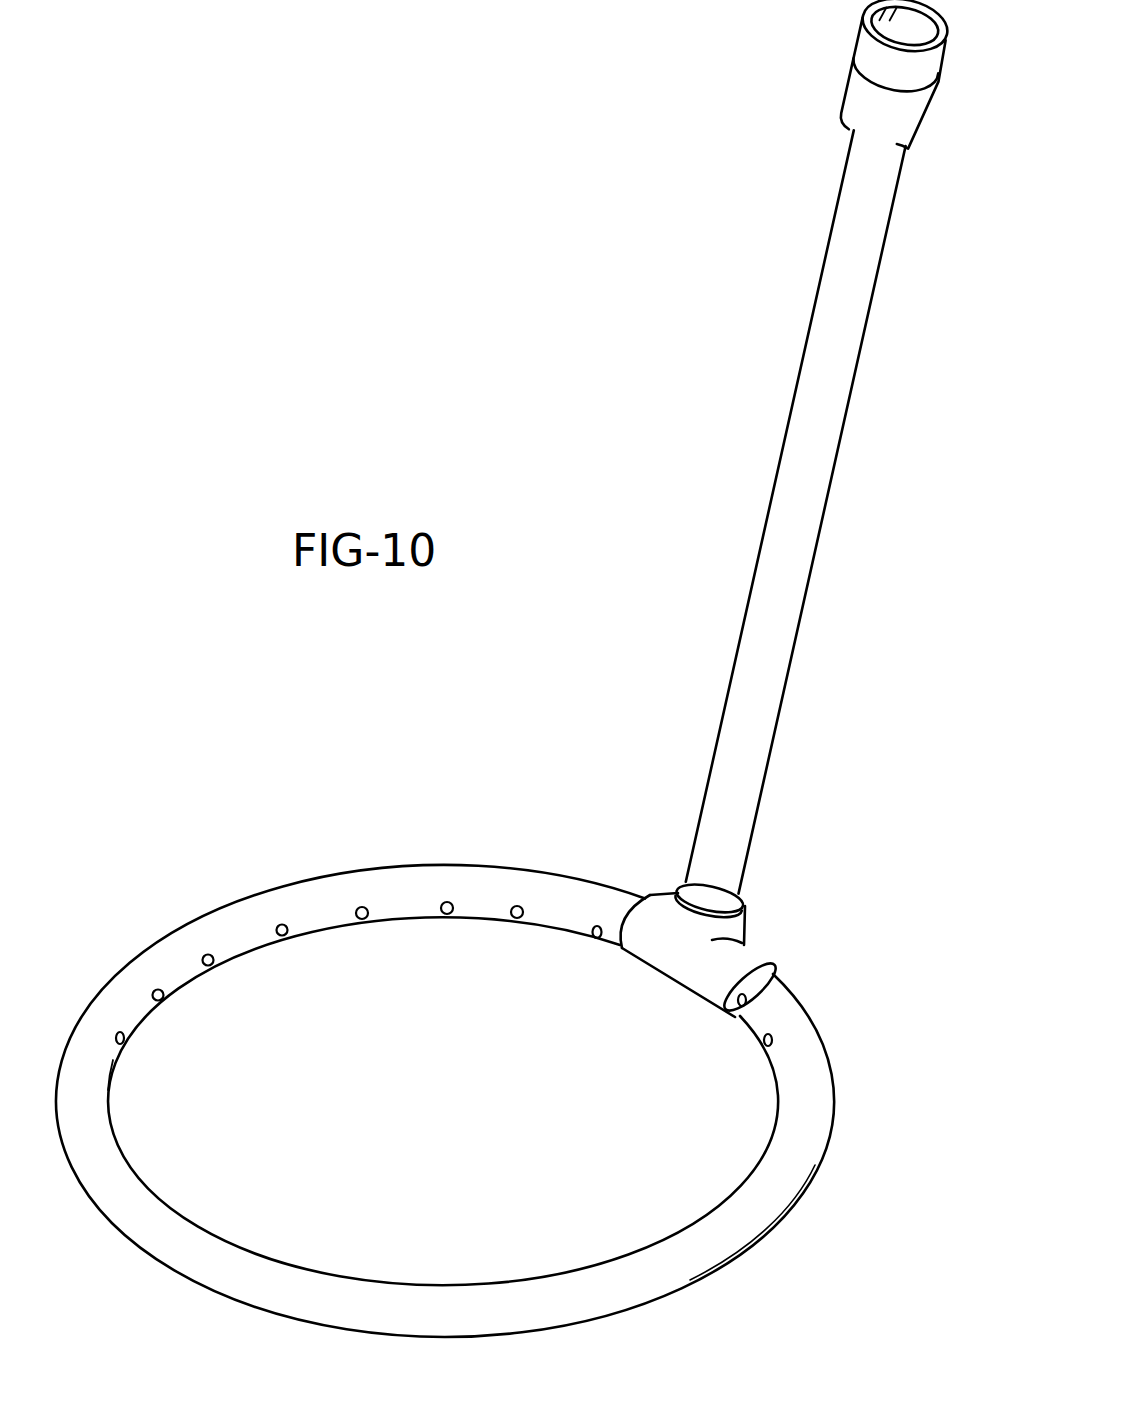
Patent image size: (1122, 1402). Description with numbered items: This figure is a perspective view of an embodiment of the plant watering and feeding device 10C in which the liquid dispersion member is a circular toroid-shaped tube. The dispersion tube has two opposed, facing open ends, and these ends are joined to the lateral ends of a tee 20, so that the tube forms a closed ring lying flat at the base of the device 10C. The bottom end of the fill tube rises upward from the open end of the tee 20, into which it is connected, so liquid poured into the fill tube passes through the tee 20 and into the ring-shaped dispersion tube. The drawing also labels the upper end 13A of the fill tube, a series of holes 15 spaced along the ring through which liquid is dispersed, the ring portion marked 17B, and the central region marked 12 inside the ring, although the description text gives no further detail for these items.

The plant watering and feeding device 10C is at (522, 664).
The ring 12 is at (445, 1095).
The upper end coupling of tube 13A is at (896, 76).
The spray holes 15 is at (163, 1000).
The hoop tubing 17B is at (270, 907).
The tee 20 is at (746, 923).